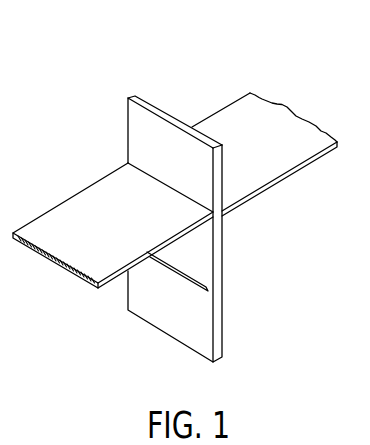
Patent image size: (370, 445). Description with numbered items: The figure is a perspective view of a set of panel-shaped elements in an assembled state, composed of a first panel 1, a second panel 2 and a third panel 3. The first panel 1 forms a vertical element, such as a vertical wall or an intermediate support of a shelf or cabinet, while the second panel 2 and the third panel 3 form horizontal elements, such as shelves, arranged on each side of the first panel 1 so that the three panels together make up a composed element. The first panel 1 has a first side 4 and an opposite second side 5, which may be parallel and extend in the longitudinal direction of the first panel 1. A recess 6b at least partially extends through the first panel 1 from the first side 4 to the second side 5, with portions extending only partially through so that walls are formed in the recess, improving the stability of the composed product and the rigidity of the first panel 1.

The first panel-shaped element 1 is at (148, 103).
The second panel-shaped element 2 is at (118, 220).
The third panel-shaped element 3 is at (277, 157).
The first side 4 is at (172, 307).
The second side 5 is at (222, 304).
The recess 6b is at (182, 280).